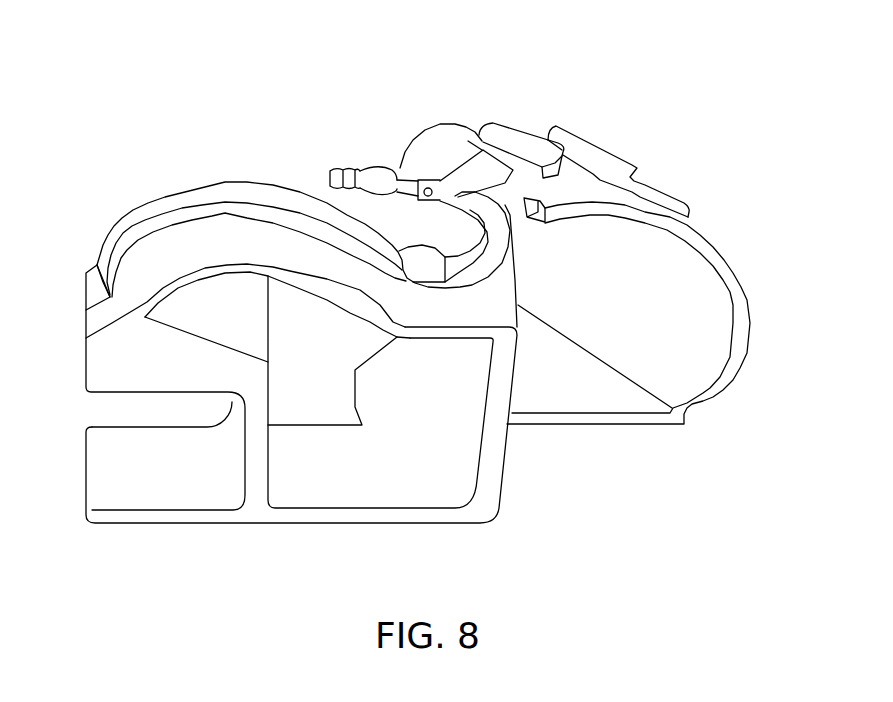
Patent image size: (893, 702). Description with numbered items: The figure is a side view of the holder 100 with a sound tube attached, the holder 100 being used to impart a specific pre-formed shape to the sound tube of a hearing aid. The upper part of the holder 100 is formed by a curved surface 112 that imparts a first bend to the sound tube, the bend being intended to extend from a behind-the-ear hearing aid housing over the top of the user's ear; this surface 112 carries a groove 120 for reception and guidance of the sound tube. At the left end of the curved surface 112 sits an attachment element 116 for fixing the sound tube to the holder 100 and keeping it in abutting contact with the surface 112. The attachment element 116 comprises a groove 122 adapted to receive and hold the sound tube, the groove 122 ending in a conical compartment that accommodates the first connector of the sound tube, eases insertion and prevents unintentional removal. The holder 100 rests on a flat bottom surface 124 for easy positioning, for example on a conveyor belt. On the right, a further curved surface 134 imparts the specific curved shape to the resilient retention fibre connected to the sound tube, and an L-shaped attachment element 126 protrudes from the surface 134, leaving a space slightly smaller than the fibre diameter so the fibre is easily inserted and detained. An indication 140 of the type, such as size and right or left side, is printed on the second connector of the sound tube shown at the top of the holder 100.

The holder 100 is at (272, 42).
The surface 112 is at (162, 205).
The attachment element 116 is at (115, 368).
The groove 120 is at (223, 212).
The groove 122 is at (93, 295).
The flat bottom surface 124 is at (378, 525).
The attachment element 126 is at (520, 132).
The curved surface 134 is at (710, 247).
The indication 140 is at (405, 180).